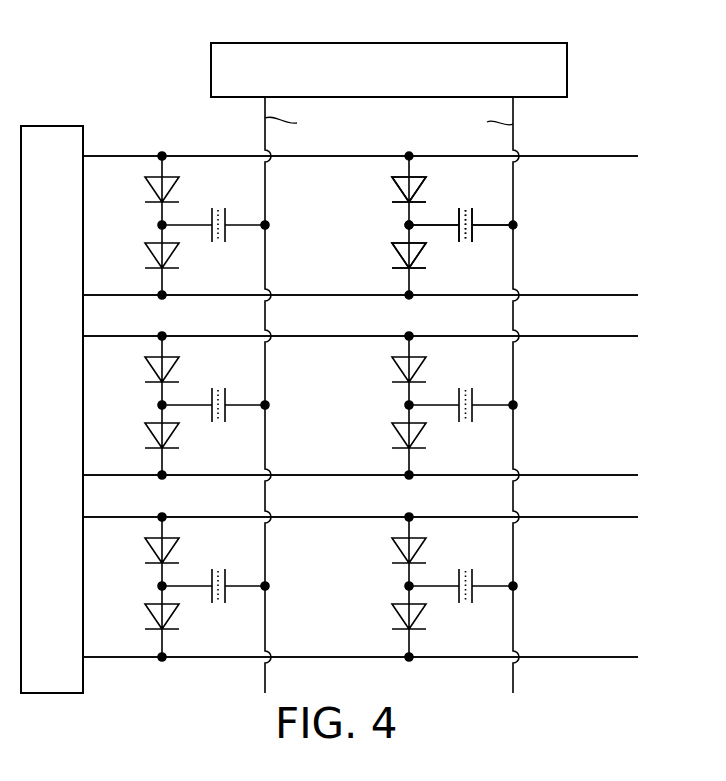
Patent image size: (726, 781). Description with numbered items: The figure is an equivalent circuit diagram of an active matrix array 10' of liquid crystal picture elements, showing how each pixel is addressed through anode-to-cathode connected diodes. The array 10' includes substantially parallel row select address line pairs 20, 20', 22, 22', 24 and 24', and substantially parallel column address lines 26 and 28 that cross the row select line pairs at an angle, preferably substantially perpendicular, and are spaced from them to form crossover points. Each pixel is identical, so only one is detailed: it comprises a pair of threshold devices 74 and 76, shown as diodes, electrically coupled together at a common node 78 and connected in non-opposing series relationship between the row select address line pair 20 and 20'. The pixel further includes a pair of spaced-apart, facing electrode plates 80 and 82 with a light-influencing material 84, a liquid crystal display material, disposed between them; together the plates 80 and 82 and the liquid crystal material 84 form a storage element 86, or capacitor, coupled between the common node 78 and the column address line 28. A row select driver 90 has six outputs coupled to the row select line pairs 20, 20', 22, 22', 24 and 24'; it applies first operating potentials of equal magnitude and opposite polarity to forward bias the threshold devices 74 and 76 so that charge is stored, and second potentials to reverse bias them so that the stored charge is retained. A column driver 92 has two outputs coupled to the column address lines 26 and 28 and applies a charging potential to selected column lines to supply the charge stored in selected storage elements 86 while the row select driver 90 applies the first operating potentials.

The row select driver 90 is at (65, 116).
The column driver 92 is at (575, 60).
The matrix array 10' is at (385, 375).
The storage element 86 is at (513, 177).
The column address line 26 is at (265, 200).
The column address line 28 is at (513, 196).
The row select address line 20 is at (370, 171).
The row select address line 20' is at (365, 262).
The row select address line 22 is at (370, 352).
The row select address line 22' is at (365, 442).
The row select address line 24 is at (370, 533).
The row select address line 24' is at (365, 623).
The threshold device 74 is at (395, 189).
The threshold device 76 is at (395, 254).
The common node 78 is at (405, 226).
The electrode plate 80 is at (459, 242).
The electrode plate 82 is at (472, 242).
The light-influencing material 84 is at (463, 208).